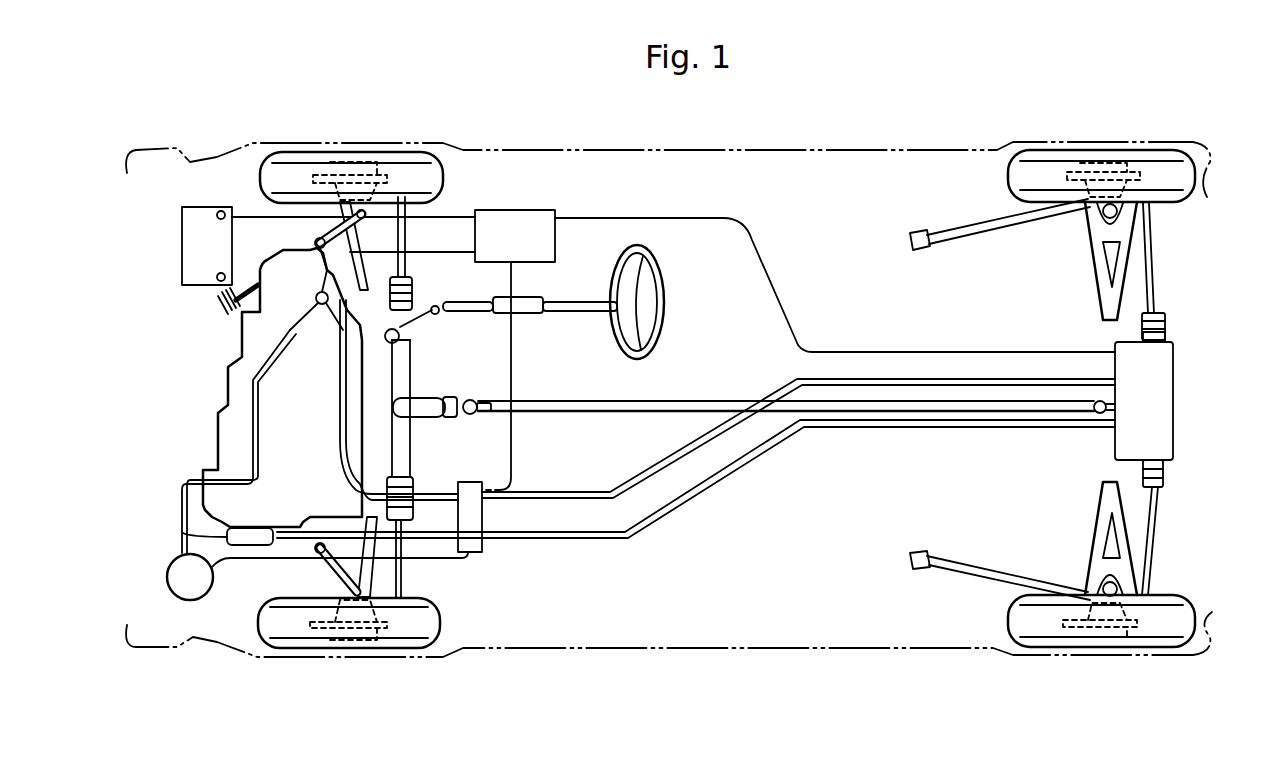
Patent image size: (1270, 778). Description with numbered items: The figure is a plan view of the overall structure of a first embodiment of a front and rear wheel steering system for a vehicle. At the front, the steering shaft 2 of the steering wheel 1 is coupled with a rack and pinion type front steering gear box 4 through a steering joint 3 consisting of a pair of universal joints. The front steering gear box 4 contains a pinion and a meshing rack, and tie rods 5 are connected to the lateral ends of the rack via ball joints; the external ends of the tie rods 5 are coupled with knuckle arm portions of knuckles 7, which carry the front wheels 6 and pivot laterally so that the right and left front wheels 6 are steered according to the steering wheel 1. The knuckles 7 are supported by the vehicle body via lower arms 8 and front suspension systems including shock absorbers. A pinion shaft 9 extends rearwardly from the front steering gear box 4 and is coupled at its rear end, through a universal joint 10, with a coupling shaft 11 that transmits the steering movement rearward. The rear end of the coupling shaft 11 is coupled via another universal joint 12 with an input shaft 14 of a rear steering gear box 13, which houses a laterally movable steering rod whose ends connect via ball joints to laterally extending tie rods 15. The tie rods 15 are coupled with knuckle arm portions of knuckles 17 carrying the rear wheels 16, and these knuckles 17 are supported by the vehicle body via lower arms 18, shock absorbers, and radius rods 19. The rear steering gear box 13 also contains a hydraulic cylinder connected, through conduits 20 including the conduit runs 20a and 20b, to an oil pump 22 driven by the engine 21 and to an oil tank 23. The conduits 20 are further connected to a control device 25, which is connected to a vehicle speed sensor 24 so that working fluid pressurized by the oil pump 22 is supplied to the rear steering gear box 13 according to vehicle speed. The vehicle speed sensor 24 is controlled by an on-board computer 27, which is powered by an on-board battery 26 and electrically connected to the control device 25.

The steering wheel 1 is at (657, 270).
The steering shaft 2 is at (563, 301).
The steering joint 3 is at (416, 330).
The front steering gear box 4 is at (412, 377).
The tie rods 5 is at (407, 240).
The front wheels 6 is at (258, 182).
The knuckles 7 is at (440, 170).
The lower arms 8 is at (349, 270).
The pinion shaft 9 is at (463, 398).
The universal joint 10 is at (471, 420).
The coupling shaft 11 is at (733, 400).
The universal joint 12 is at (1095, 402).
The rear steering gear box 13 is at (1175, 386).
The input shaft 14 is at (1103, 427).
The tie rods 15 is at (1152, 259).
The rear wheels 16 is at (1008, 181).
The knuckles 17 is at (1150, 170).
The lower arms 18 is at (1093, 263).
The radius rods 19 is at (963, 243).
The conduits 20 is at (438, 540).
The hydraulic pipe 20a is at (712, 478).
The hydraulic pipe 20b is at (672, 470).
The engine 21 is at (222, 402).
The oil pump 22 is at (253, 546).
The oil tank 23 is at (167, 572).
The vehicle speed sensor 24 is at (314, 298).
The control device 25 is at (485, 514).
The on-board battery 26 is at (182, 242).
The on-board computer 27 is at (533, 210).